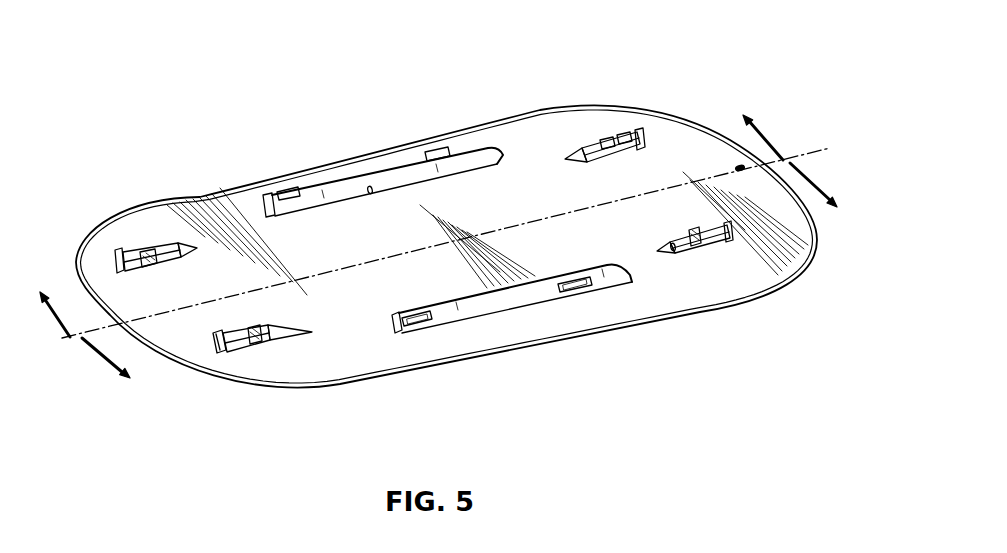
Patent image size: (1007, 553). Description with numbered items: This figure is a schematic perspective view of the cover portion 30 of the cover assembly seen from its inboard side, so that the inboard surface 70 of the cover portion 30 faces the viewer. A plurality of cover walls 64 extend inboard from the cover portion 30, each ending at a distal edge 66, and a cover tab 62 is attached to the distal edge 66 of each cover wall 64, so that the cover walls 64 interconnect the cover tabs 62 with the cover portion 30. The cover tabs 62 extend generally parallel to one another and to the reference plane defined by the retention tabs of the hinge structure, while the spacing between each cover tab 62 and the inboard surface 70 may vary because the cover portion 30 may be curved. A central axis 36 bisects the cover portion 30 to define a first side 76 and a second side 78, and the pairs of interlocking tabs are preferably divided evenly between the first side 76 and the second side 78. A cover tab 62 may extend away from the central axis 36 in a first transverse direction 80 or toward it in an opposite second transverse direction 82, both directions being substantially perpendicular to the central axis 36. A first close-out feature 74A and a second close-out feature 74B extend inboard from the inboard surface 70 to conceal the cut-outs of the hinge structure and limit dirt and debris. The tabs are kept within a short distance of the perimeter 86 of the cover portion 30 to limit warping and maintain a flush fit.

The cover portion 30 is at (672, 62).
The central axis 36 is at (78, 342).
The cover tab 62 is at (143, 266).
The cover wall 64 is at (173, 248).
The distal edge 66 is at (126, 252).
The inboard surface 70 is at (160, 260).
The first close-out feature 74A is at (112, 262).
The second close-out feature 74B is at (216, 345).
The first side 76 is at (777, 150).
The second side 78 is at (833, 203).
The first transverse direction 80 is at (110, 365).
The second transverse direction 82 is at (57, 313).
The perimeter 86 is at (485, 358).